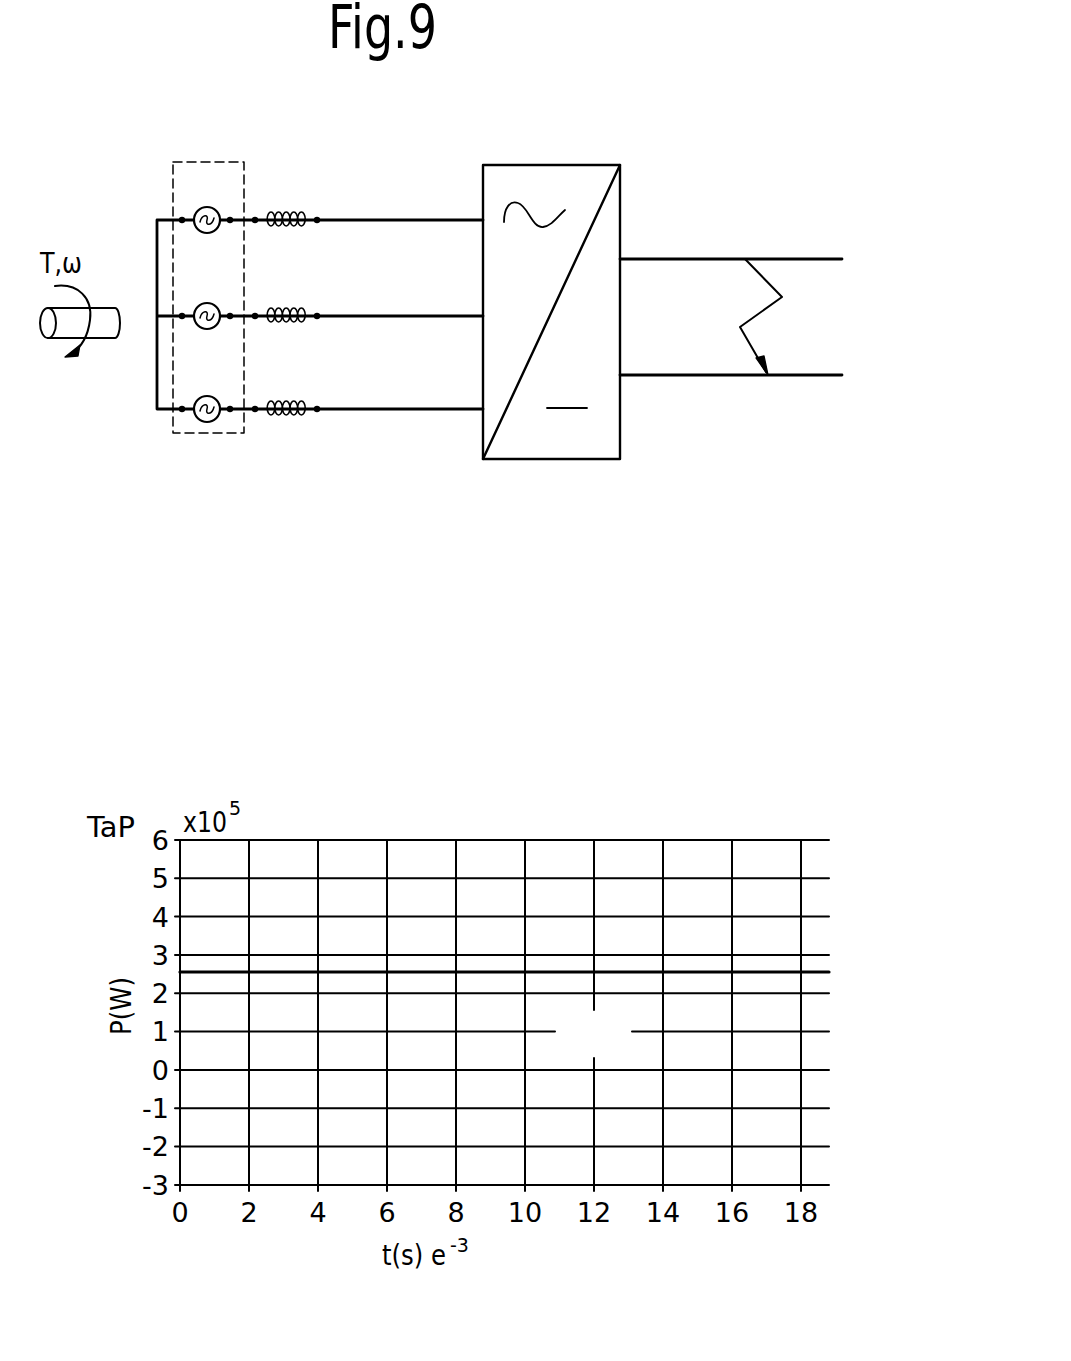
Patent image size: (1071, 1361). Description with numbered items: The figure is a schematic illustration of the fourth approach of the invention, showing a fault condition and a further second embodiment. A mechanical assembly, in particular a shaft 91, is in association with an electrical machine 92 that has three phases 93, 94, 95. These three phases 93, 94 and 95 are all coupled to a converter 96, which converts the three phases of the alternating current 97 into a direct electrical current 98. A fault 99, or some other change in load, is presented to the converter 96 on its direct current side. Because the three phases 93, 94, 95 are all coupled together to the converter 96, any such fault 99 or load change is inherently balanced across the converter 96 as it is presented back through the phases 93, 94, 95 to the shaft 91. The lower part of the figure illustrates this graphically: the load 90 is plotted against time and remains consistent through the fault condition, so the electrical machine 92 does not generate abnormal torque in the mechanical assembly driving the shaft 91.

The load 90 is at (637, 975).
The shaft 91 is at (103, 327).
The electrical machine 92 is at (233, 172).
The first phase 93 is at (206, 207).
The second phase 94 is at (209, 304).
The third phase 95 is at (209, 397).
The converter 96 is at (605, 182).
The alternating current 97 is at (533, 224).
The direct electrical current 98 is at (570, 407).
The fault 99 is at (740, 324).